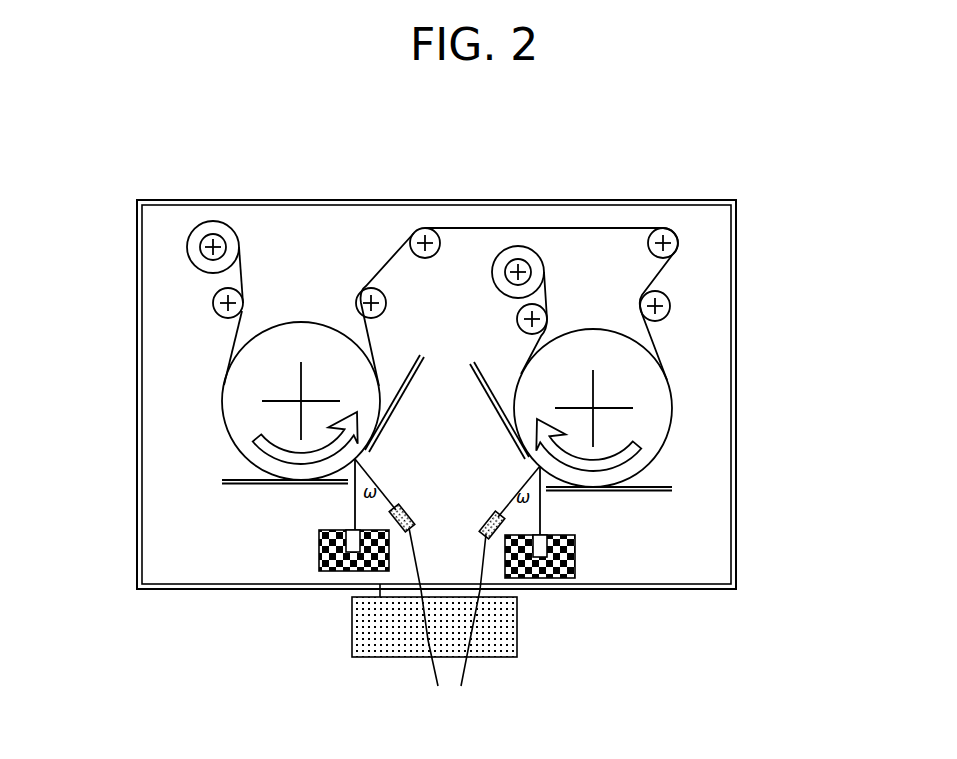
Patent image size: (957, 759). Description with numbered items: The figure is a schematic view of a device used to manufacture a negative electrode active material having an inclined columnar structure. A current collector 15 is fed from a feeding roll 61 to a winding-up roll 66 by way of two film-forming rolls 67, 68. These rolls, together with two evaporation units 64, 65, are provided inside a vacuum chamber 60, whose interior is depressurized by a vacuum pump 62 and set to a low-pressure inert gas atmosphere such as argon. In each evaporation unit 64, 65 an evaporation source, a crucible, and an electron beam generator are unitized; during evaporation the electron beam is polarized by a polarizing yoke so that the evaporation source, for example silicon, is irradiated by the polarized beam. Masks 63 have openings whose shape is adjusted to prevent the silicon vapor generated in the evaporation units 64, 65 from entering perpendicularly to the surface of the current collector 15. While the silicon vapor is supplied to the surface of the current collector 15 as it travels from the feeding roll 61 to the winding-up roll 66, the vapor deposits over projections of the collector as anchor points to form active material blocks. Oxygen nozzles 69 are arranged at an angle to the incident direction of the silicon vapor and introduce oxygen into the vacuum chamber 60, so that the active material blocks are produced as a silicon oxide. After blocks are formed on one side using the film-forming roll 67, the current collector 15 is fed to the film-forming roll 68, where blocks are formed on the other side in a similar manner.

The current collector 15 is at (232, 347).
The vacuum chamber 60 is at (442, 204).
The feeding roll 61 is at (214, 233).
The vacuum pump 62 is at (352, 625).
The masks 63 is at (395, 407).
The evaporation unit 64 is at (319, 555).
The evaporation unit 65 is at (567, 579).
The winding-up roll 66 is at (520, 258).
The film-forming roll 67 is at (253, 408).
The film-forming roll 68 is at (658, 406).
The oxygen nozzle 69 is at (447, 589).